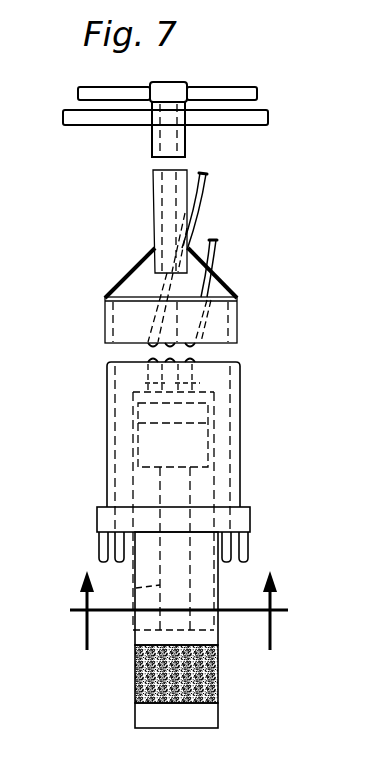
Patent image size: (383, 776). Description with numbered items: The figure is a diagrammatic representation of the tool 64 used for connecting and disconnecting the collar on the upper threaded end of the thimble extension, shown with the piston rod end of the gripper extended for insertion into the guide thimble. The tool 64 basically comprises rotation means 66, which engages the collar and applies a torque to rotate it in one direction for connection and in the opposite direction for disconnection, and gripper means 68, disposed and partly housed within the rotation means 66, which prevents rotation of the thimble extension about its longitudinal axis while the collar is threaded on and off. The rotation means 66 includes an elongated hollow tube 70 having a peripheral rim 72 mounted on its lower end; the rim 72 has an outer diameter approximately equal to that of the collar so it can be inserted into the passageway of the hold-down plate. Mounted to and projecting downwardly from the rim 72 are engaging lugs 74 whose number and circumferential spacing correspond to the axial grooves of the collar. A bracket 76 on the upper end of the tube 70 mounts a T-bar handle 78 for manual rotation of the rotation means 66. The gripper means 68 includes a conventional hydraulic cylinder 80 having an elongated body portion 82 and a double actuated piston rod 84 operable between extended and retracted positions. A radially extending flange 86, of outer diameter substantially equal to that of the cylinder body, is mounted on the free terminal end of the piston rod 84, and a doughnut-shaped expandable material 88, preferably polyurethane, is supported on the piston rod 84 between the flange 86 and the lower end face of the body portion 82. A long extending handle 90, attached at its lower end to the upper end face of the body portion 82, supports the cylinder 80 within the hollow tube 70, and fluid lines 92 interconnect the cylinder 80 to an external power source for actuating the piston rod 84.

The tool 64 is at (281, 220).
The rotation means 66 is at (283, 420).
The gripper means 68 is at (256, 708).
The elongated hollow tube 70 is at (240, 398).
The peripheral rim 72 is at (97, 512).
The engaging lugs 74 is at (98, 547).
The bracket 76 is at (125, 276).
The T-bar handle 78 is at (233, 118).
The hydraulic cylinder 80 is at (290, 578).
The elongated body portion 82 is at (218, 573).
The double actuated piston rod 84 is at (136, 588).
The radially extending flange 86 is at (167, 722).
The expandable material 88 is at (135, 677).
The long extending handle 90 is at (187, 83).
The fluid lines 92 is at (214, 238).